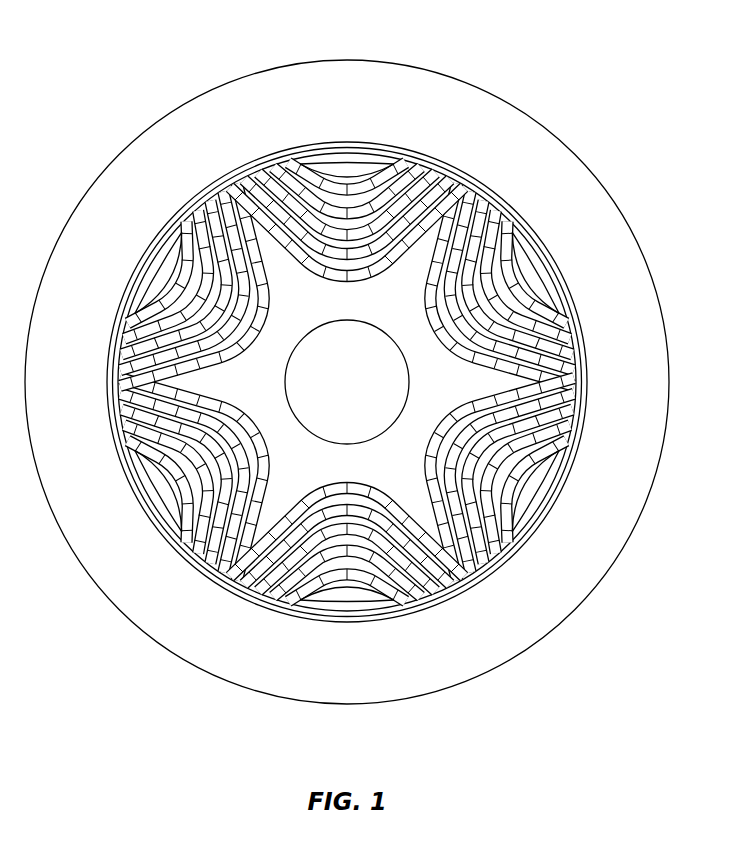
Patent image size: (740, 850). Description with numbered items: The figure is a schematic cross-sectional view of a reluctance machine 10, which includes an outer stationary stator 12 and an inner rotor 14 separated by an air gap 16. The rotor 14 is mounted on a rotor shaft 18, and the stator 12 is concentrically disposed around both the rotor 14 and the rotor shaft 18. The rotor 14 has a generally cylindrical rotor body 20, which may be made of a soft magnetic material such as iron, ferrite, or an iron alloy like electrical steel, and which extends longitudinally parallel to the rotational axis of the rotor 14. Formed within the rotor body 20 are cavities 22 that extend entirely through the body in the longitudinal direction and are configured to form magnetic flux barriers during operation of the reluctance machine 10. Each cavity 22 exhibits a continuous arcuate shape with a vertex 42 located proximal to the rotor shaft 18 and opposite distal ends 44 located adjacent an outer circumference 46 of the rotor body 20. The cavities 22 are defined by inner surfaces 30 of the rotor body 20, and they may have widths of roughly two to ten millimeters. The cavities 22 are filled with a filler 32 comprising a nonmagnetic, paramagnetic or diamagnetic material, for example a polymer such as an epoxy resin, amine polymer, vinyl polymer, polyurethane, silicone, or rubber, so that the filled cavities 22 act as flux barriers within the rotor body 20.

The reluctance machine 10 is at (173, 86).
The stator 12 is at (175, 657).
The rotor 14 is at (437, 162).
The air gap 16 is at (338, 621).
The rotor shaft 18 is at (358, 392).
The rotor body 20 is at (578, 372).
The cavities 22 is at (430, 322).
The inner surfaces 30 is at (262, 316).
The filler 32 is at (530, 495).
The vertex 42 is at (343, 486).
The distal ends 44 is at (133, 312).
The outer circumference 46 is at (228, 184).